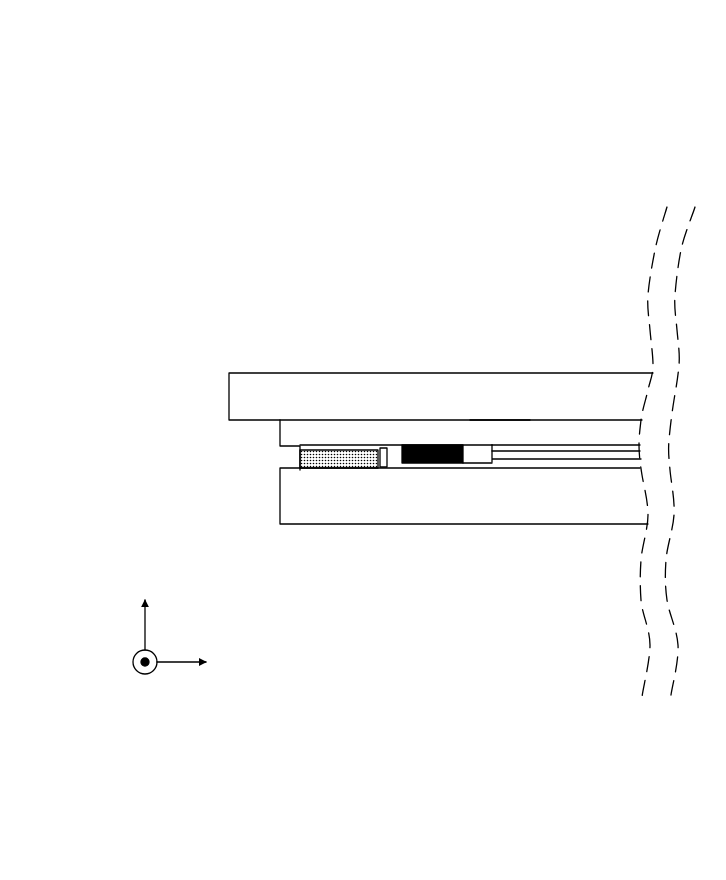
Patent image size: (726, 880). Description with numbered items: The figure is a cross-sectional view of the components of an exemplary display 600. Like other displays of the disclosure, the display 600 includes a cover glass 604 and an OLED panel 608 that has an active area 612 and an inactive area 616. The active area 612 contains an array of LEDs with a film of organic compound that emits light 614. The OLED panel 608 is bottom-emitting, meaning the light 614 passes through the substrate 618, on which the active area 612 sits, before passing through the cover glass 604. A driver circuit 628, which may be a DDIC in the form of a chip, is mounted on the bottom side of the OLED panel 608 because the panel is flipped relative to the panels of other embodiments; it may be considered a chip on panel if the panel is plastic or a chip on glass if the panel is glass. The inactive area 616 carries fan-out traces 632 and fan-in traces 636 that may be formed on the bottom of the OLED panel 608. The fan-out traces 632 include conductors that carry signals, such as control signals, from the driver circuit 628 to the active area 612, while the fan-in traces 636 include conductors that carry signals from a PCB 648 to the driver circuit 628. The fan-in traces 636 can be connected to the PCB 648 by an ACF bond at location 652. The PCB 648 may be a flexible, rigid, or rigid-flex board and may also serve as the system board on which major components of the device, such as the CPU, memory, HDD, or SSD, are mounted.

The display device 600 is at (126, 148).
The cover glass 604 is at (258, 373).
The OLED panel 608 is at (497, 414).
The active area 612 is at (550, 450).
The light 614 is at (560, 448).
The inactive area 616 is at (348, 432).
The substrate 618 is at (605, 432).
The driver circuit 628 is at (447, 463).
The fan-out traces 632 is at (480, 448).
The fan-in traces 636 is at (386, 450).
The PCB 648 is at (293, 524).
The location 652 is at (300, 458).